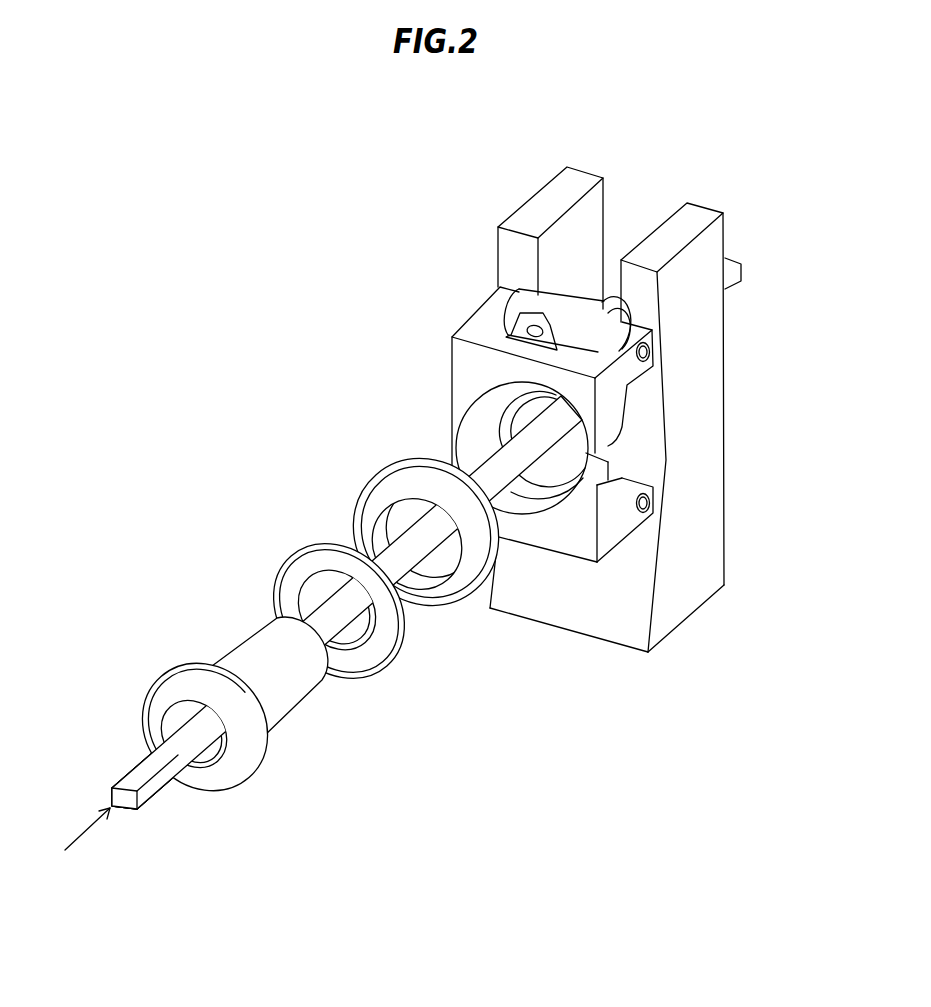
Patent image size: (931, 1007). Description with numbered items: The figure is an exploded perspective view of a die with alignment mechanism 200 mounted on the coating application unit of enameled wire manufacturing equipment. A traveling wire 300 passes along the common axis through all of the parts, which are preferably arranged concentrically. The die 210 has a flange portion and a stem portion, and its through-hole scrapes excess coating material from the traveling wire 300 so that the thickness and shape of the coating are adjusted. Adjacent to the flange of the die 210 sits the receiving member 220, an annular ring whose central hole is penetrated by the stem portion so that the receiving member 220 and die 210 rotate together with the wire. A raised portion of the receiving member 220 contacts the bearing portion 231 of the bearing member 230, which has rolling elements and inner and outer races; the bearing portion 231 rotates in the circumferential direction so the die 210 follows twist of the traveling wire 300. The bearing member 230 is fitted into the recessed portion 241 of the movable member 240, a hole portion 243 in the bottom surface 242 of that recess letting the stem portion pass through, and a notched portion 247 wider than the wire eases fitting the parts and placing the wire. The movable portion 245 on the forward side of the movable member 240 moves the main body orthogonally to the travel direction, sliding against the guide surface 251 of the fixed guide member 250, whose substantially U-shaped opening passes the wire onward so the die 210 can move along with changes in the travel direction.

The die with alignment mechanism 200 is at (240, 347).
The die 210 is at (287, 717).
The receiving member 220 is at (376, 683).
The bearing member 230 is at (455, 614).
The bearing portion 231 is at (370, 508).
The movable member 240 is at (466, 299).
The recessed portion 241 is at (465, 446).
The bottom surface 242 is at (485, 417).
The hole portion 243 is at (528, 400).
The movable portion 245 is at (573, 306).
The notched portion 247 is at (607, 455).
The guide member 250 is at (598, 642).
The guide surface 251 is at (660, 470).
The traveling wire 300 is at (150, 797).